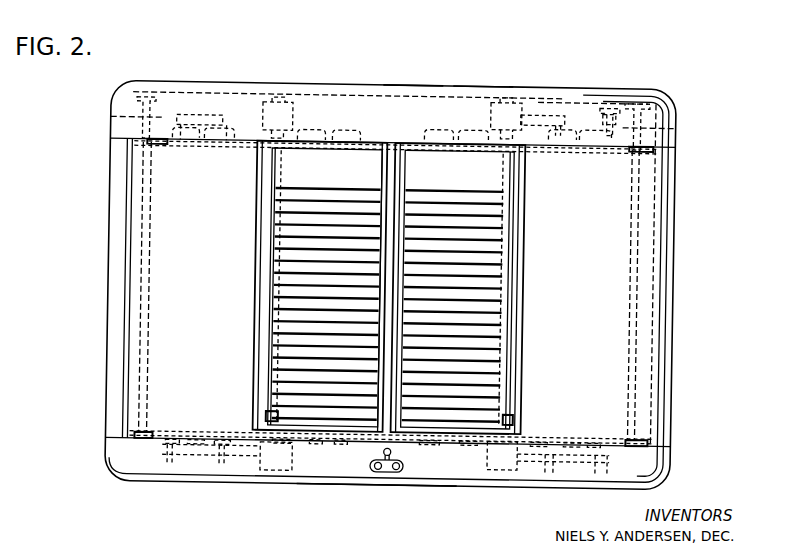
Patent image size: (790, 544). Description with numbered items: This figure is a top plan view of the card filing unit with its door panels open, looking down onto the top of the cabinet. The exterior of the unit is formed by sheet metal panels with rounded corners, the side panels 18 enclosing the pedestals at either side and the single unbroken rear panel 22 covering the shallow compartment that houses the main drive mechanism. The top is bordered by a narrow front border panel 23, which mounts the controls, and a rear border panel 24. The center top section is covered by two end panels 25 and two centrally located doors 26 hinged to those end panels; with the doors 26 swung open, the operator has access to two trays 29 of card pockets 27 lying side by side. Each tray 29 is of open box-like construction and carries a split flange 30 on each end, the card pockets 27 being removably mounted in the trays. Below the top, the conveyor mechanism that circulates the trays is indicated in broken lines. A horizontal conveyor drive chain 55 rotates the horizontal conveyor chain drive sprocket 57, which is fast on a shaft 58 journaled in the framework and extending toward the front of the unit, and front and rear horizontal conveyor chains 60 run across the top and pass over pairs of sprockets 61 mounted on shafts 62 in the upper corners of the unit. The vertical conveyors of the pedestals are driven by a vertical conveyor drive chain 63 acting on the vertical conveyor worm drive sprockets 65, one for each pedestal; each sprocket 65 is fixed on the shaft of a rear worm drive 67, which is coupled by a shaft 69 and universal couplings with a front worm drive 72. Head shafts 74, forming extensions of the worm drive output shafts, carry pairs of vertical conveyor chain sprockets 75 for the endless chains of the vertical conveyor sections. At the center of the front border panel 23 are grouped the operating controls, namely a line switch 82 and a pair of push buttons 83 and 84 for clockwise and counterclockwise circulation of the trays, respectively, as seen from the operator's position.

The side panels 18 is at (108, 257).
The rear panel 22 is at (402, 85).
The front border panel 23 is at (696, 478).
The rear border panel 24 is at (469, 86).
The end panels 25 is at (117, 308).
The door panels 26 is at (164, 349).
The card pockets 27 is at (443, 230).
The trays 29 is at (267, 295).
The split flange 30 is at (230, 138).
The horizontal conveyor drive chain 55 is at (614, 98).
The horizontal conveyor chain drive sprocket 57 is at (138, 100).
The shaft 58 is at (140, 121).
The horizontal conveyor chains 60 is at (365, 138).
The sprockets 61 is at (150, 147).
The shafts 62 is at (148, 291).
The vertical conveyor drive chain 63 is at (315, 96).
The vertical conveyor worm drive sprockets 65 is at (269, 102).
The rear worm drive 67 is at (260, 100).
The shaft 69 is at (265, 169).
The front worm drive 72 is at (280, 472).
The head shafts 74 is at (198, 113).
The vertical conveyor chain sprockets 75 is at (229, 121).
The line switch 82 is at (388, 470).
The push button 83 is at (398, 470).
The push button 84 is at (380, 470).